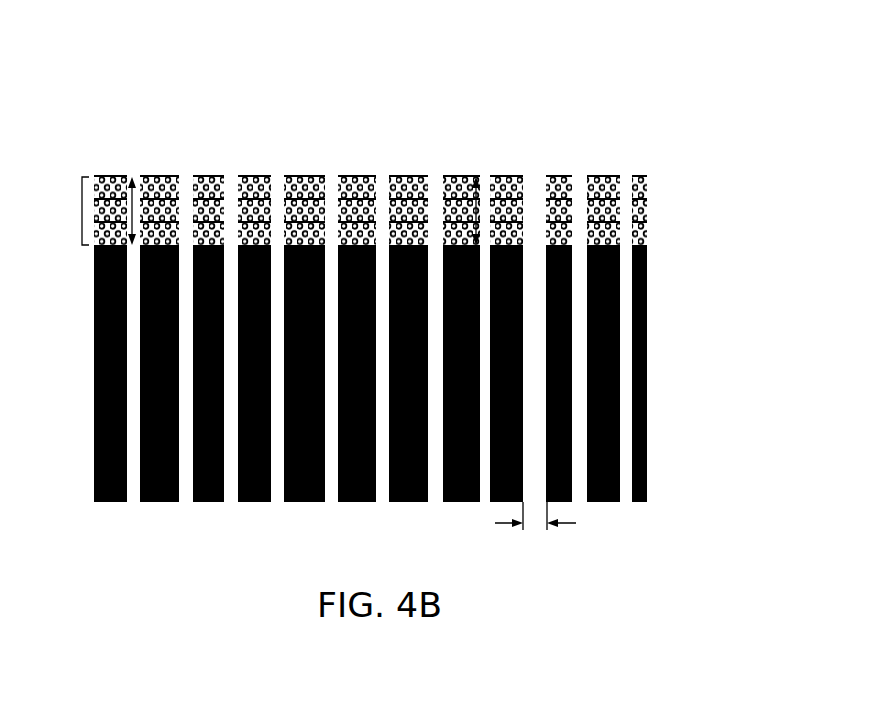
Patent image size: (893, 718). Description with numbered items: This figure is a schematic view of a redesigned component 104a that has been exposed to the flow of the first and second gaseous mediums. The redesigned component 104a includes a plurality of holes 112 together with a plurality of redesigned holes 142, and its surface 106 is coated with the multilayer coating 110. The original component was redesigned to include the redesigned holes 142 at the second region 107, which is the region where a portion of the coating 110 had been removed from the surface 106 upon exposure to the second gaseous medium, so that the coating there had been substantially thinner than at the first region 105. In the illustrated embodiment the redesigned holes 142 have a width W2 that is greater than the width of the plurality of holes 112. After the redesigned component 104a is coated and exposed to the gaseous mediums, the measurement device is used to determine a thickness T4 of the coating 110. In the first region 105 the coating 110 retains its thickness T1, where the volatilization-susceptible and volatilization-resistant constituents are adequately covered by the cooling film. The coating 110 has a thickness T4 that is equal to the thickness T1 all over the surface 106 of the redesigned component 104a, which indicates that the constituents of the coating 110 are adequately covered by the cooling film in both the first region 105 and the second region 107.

The redesigned component 104a is at (662, 64).
The first region 105 is at (281, 154).
The surface 106 is at (108, 244).
The second region 107 is at (464, 154).
The coating 110 is at (82, 210).
The holes 112 is at (232, 494).
The redesigned holes 142 is at (535, 492).
The thickness T1 is at (134, 210).
The thickness T4 is at (478, 210).
The width W2 is at (510, 524).